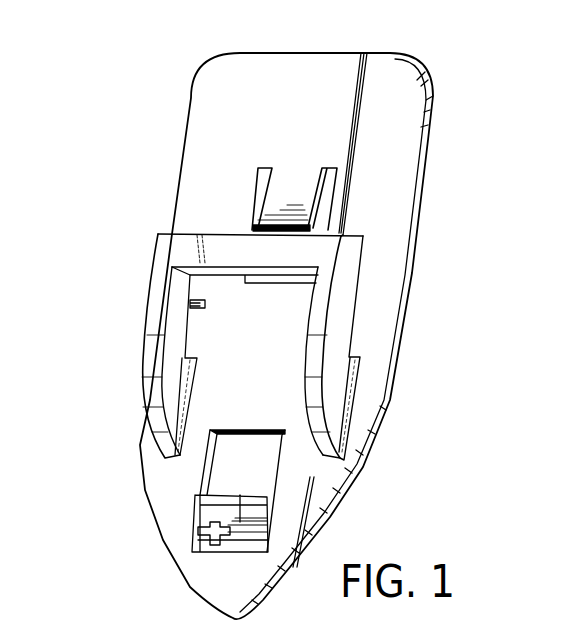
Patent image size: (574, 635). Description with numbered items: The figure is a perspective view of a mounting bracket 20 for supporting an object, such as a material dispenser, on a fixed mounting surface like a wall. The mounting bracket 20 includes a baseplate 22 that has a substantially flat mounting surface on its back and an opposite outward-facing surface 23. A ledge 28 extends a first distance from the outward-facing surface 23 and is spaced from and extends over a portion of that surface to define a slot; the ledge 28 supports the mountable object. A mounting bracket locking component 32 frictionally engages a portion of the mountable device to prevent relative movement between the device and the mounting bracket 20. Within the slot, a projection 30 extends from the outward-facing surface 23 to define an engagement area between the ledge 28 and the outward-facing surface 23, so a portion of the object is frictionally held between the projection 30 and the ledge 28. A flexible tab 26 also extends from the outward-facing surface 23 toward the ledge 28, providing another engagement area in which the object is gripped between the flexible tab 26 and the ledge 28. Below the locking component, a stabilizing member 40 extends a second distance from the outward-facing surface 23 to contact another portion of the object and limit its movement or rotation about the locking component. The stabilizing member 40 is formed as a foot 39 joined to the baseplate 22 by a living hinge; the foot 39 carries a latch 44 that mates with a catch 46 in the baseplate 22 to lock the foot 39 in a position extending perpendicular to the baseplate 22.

The mounting bracket 20 is at (262, 336).
The baseplate 22 is at (310, 336).
The outward-facing surface 23 is at (382, 279).
The flexible tab 26 is at (288, 188).
The ledge 28 is at (327, 252).
The projection 30 is at (196, 309).
The mounting bracket locking component 32 is at (246, 321).
The foot 39 is at (227, 516).
The stabilizing member 40 is at (199, 508).
The latch 44 is at (205, 521).
The catch 46 is at (205, 543).